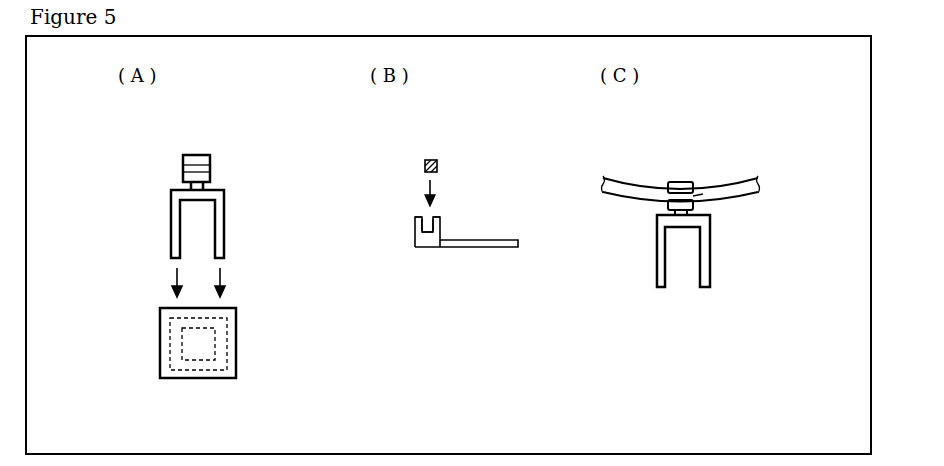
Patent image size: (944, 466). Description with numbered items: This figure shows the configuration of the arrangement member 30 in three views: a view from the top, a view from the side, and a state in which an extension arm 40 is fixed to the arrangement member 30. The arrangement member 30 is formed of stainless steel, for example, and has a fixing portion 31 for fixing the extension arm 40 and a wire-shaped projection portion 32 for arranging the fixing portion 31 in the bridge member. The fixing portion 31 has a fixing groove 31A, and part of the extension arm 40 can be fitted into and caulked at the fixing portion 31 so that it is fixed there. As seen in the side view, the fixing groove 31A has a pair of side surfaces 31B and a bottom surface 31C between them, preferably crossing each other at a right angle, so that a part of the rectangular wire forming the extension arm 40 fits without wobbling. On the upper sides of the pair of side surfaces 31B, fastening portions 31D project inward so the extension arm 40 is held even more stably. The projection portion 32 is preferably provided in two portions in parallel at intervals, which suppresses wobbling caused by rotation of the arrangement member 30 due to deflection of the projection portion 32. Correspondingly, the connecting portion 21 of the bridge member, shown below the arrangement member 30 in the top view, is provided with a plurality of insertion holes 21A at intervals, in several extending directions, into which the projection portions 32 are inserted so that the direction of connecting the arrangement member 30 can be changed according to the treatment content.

The arrangement member 30 is at (233, 134).
The fixing portion 31 is at (179, 150).
The fixing groove 31A is at (211, 168).
The side surfaces 31B is at (423, 225).
The bottom surface 31C is at (427, 234).
The fastening portions 31D is at (417, 216).
The projection portion 32 is at (173, 227).
The extension arm 40 is at (430, 158).
The connecting portion 21 is at (236, 340).
The insertion hole 21A is at (161, 368).